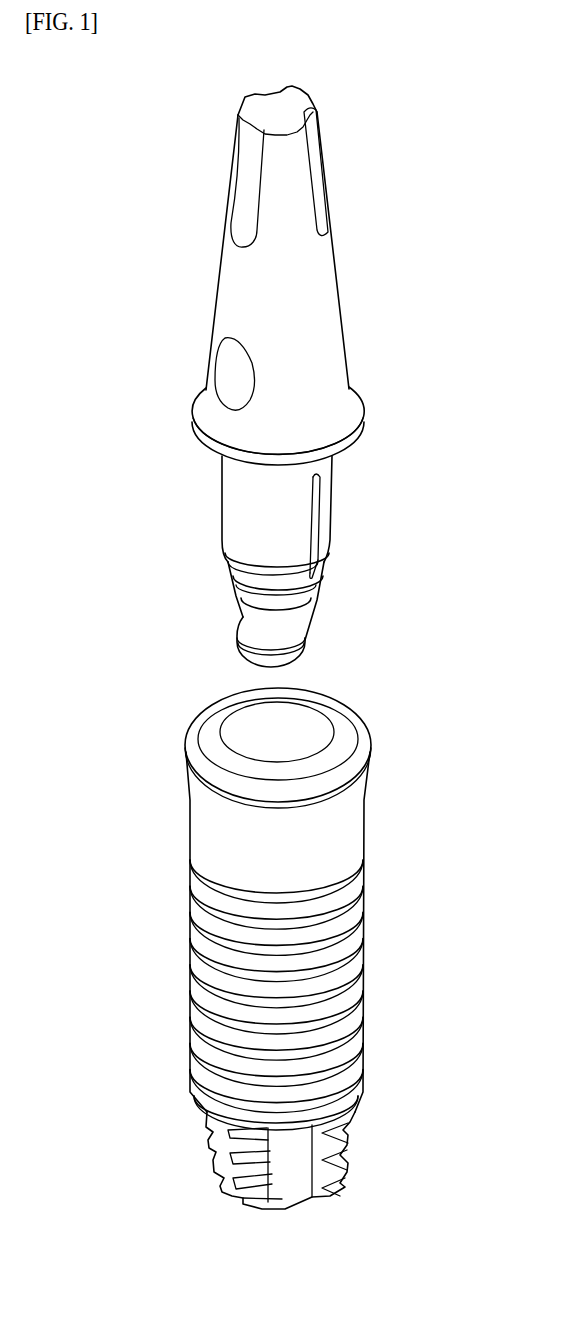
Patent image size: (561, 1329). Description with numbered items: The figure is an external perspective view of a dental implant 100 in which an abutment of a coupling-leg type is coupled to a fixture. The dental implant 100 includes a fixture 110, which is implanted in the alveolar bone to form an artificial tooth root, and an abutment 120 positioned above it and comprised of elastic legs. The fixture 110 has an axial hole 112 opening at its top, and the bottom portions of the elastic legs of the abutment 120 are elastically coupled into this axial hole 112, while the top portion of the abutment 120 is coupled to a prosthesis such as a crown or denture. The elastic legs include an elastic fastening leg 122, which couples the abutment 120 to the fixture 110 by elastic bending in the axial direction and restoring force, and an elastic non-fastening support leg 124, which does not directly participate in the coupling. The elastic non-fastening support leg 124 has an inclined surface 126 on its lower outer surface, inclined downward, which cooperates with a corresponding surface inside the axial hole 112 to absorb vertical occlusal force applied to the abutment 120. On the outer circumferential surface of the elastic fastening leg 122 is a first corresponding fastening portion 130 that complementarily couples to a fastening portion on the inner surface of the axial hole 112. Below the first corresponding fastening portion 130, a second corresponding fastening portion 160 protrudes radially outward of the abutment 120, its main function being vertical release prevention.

The dental implant 100 is at (94, 182).
The fixture 110 is at (355, 826).
The axial hole 112 is at (263, 733).
The abutment 120 is at (330, 470).
The elastic fastening leg 122 is at (248, 619).
The elastic non-fastening support leg 124 is at (330, 513).
The inclined surface 126 is at (324, 566).
The first corresponding fastening portion 130 is at (231, 589).
The second corresponding fastening portion 160 is at (240, 650).